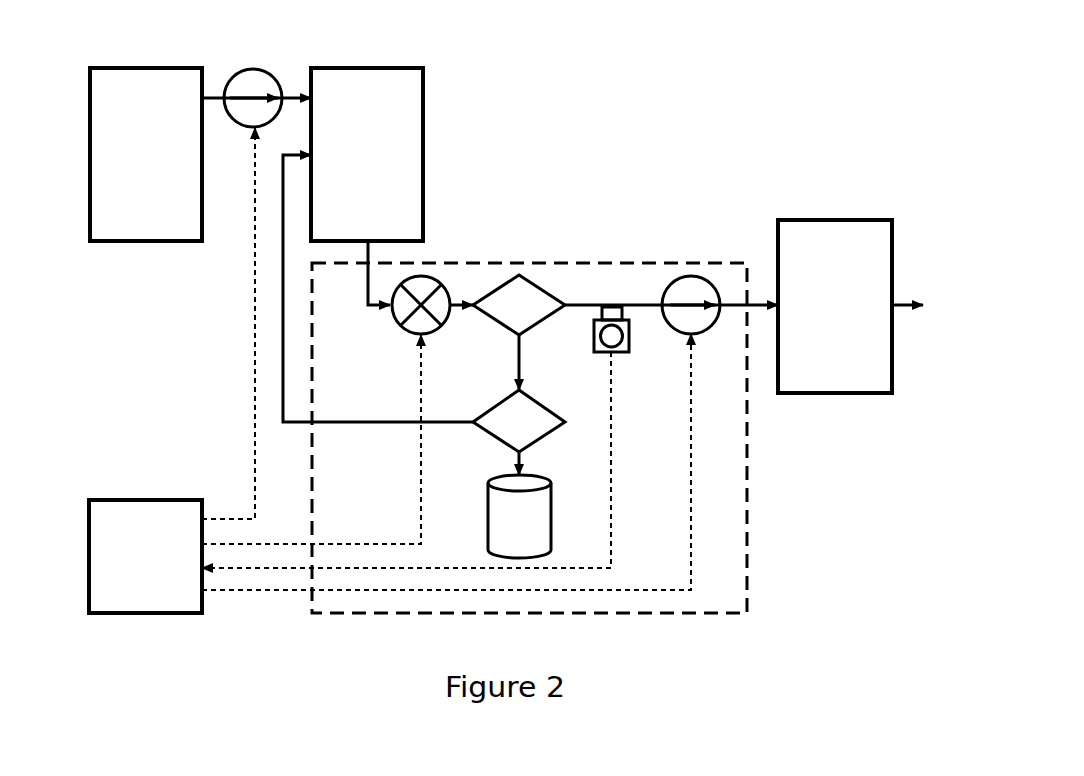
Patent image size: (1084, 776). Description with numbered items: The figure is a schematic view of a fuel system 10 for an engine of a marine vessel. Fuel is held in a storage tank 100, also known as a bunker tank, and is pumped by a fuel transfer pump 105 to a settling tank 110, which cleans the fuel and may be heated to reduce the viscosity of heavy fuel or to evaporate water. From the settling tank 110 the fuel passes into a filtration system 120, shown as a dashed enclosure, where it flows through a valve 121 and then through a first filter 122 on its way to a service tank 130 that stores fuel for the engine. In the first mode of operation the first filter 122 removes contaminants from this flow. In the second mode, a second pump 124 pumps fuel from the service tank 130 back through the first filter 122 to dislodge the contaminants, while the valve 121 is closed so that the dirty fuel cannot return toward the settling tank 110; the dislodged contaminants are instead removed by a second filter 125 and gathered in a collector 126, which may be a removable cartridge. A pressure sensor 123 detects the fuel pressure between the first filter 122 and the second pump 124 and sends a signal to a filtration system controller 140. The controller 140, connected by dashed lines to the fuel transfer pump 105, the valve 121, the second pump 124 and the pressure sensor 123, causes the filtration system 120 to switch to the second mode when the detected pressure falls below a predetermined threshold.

The fuel system 10 is at (624, 120).
The storage tank 100 is at (146, 154).
The fuel transfer pump 105 is at (259, 62).
The settling tank 110 is at (367, 154).
The filtration system 120 is at (546, 256).
The valve 121 is at (440, 340).
The first filter 122 is at (519, 305).
The pressure sensor 123 is at (591, 338).
The second pump 124 is at (677, 342).
The second filter 125 is at (519, 421).
The collector 126 is at (519, 516).
The service tank 130 is at (835, 306).
The filtration system controller 140 is at (145, 556).